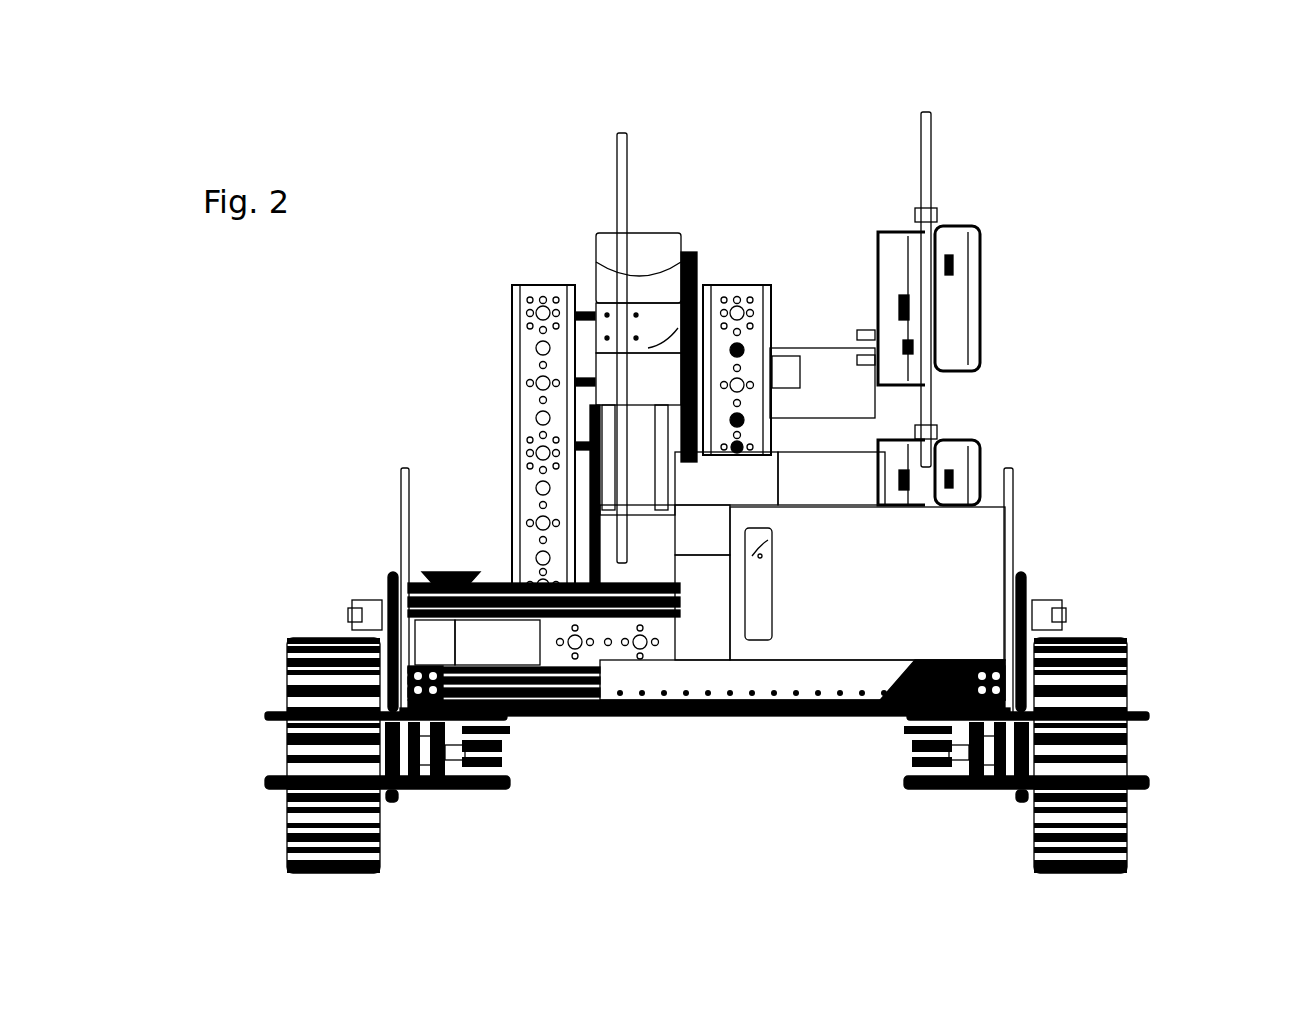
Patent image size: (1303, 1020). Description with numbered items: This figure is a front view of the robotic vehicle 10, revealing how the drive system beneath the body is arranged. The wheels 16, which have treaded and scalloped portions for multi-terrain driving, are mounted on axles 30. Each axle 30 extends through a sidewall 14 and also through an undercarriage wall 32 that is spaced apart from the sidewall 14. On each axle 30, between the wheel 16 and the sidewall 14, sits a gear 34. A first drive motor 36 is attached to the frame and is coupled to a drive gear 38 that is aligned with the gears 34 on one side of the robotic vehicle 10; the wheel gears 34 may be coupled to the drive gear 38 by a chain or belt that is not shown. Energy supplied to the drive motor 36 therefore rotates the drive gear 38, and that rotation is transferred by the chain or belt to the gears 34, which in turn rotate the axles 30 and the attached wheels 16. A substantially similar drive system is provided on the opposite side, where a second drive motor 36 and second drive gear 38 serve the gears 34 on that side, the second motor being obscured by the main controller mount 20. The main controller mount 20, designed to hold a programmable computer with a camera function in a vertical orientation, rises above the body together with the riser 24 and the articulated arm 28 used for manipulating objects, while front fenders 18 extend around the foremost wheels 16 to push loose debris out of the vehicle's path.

The robotic vehicle 10 is at (823, 130).
The sidewall 14 is at (1012, 478).
The wheels 16 is at (318, 815).
The front fenders 18 is at (1115, 758).
The main controller mount 20 is at (912, 580).
The riser 24 is at (931, 140).
The arm 28 is at (516, 298).
The axles 30 is at (880, 740).
The undercarriage wall 32 is at (462, 790).
The gears 34 is at (393, 795).
The drive motor 36 is at (495, 580).
The drive gear 38 is at (383, 600).